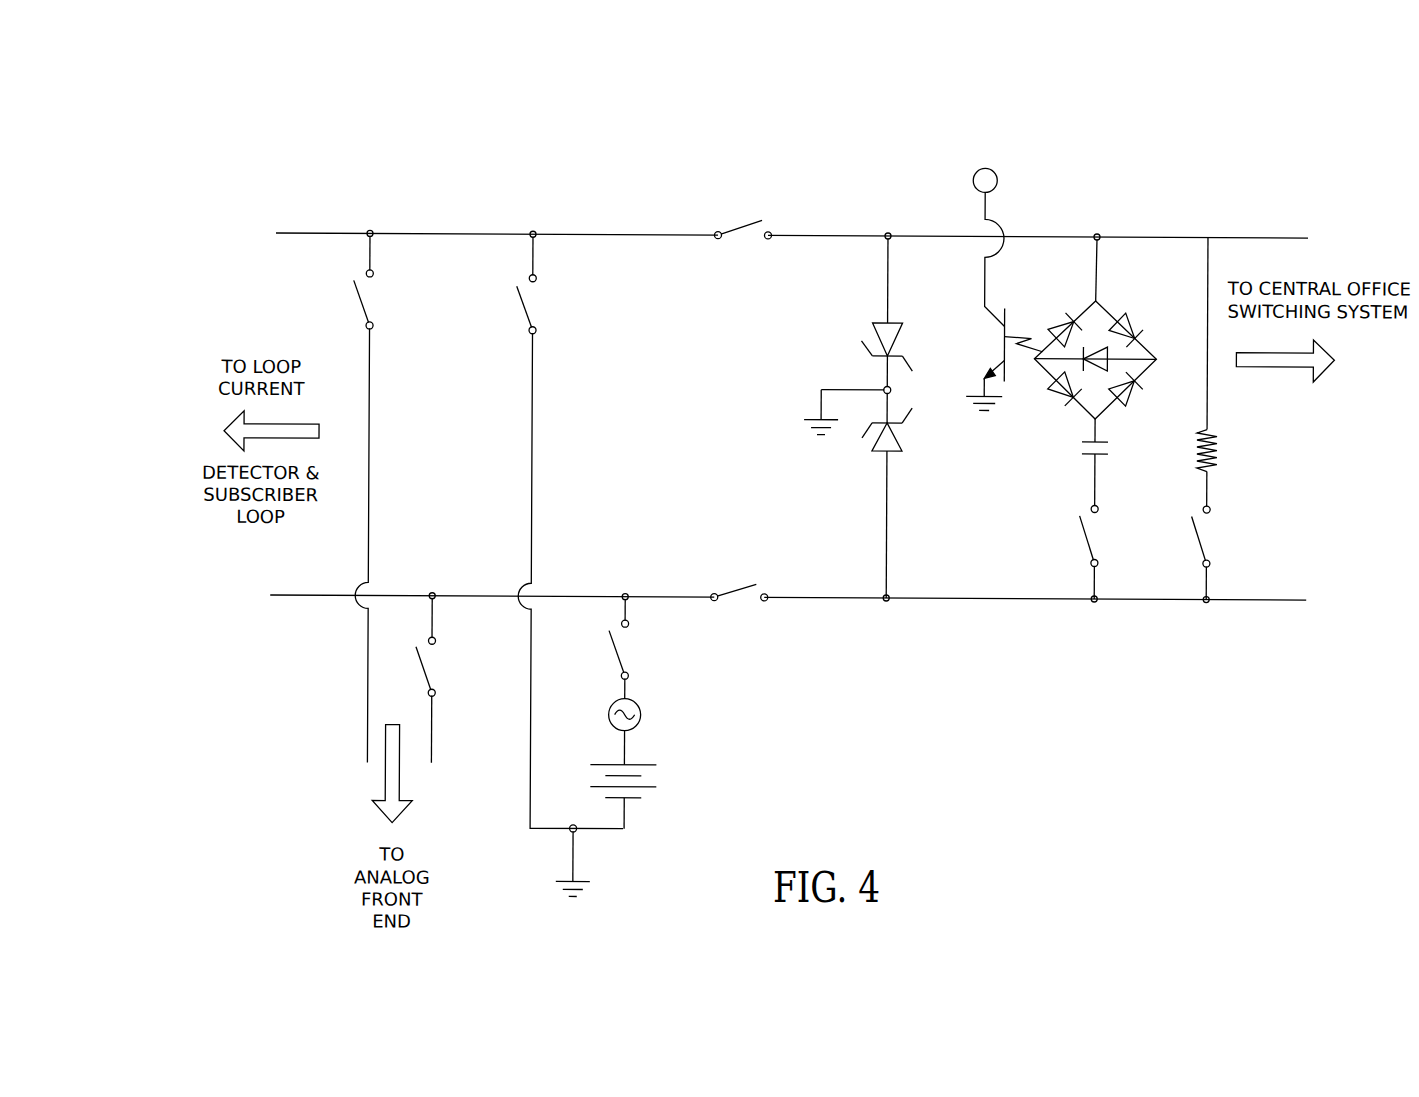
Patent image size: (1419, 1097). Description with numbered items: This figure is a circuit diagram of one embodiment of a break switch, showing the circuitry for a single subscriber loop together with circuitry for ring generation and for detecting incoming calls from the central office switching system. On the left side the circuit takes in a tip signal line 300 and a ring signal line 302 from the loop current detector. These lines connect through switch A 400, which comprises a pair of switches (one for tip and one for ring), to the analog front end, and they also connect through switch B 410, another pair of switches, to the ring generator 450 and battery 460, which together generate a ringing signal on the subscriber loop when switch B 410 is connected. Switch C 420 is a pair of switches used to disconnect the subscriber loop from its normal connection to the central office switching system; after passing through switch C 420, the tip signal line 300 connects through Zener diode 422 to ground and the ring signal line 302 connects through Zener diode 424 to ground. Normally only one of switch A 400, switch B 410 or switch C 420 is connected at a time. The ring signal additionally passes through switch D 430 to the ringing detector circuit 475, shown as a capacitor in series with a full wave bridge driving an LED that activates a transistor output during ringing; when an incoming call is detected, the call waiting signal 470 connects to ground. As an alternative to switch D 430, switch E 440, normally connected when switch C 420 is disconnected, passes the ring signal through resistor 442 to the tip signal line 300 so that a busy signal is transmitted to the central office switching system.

The tip signal line 300 is at (768, 236).
The ring signal line 302 is at (763, 598).
The switch A 400 is at (436, 496).
The switch B 410 is at (617, 530).
The switch C 420 is at (744, 410).
The Zener diode 422 is at (871, 334).
The Zener diode 424 is at (899, 497).
The switch D 430 is at (1041, 510).
The switch E 440 is at (1255, 554).
The resistor 442 is at (1227, 372).
The ring generator 450 is at (686, 719).
The battery 460 is at (677, 793).
The call waiting signal 470 is at (985, 267).
The ringing detector circuit 475 is at (1096, 327).